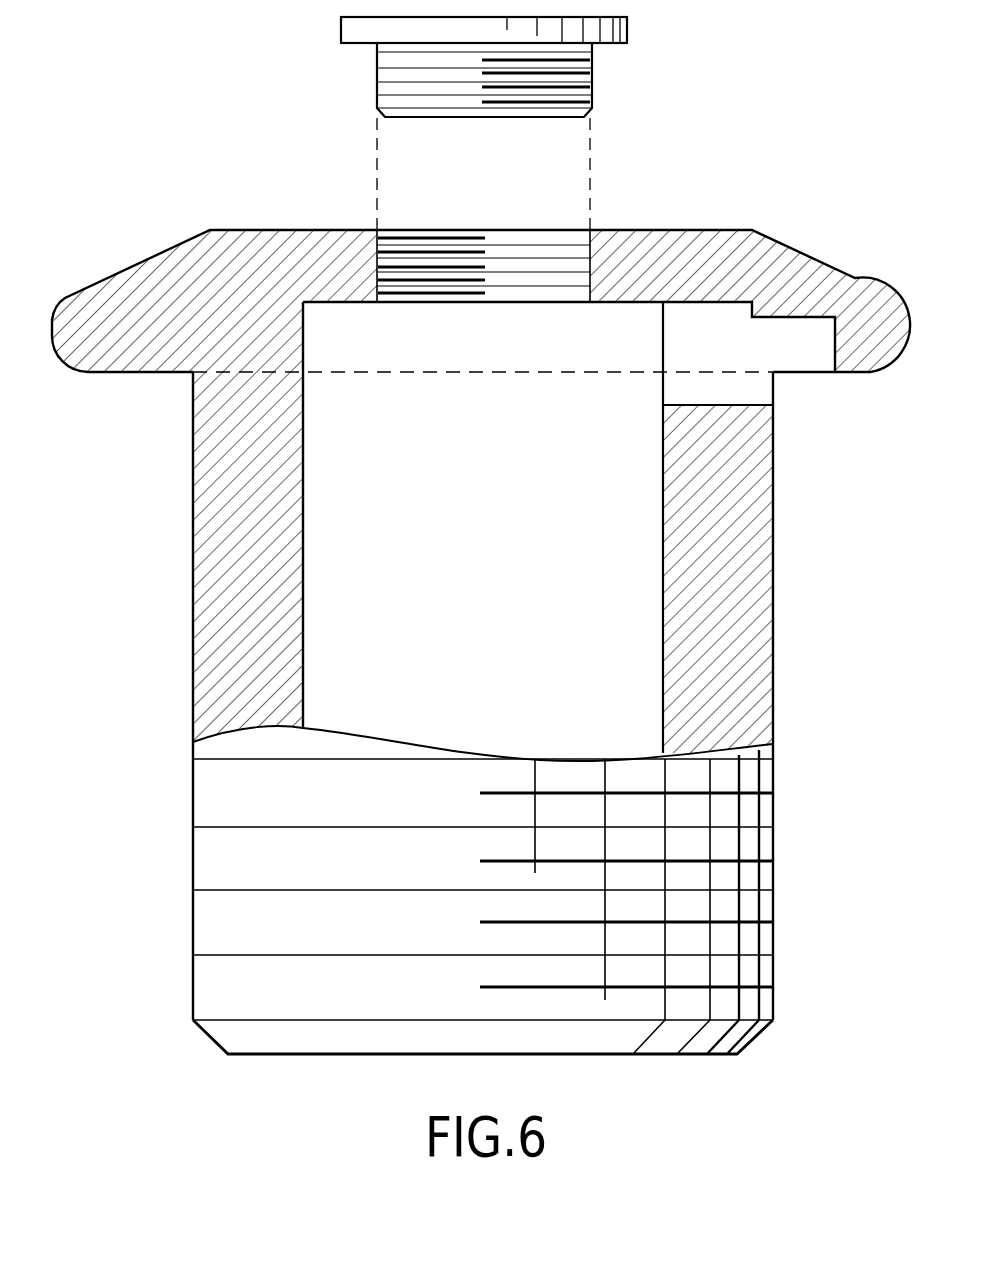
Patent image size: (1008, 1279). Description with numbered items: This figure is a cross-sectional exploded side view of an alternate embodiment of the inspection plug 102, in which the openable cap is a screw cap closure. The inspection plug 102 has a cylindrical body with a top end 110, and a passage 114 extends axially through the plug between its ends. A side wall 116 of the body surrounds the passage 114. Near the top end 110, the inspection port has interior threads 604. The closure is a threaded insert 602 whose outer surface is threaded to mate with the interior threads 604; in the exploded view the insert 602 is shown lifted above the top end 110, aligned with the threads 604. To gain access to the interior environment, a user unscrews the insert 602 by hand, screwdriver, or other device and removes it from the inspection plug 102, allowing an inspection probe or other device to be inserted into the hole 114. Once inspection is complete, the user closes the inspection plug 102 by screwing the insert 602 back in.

The inspection plug 102 is at (504, 639).
The top end 110 is at (250, 230).
The passage 114 is at (578, 513).
The side wall 116 is at (303, 490).
The threaded insert 602 is at (592, 72).
The interior threads 604 is at (387, 278).